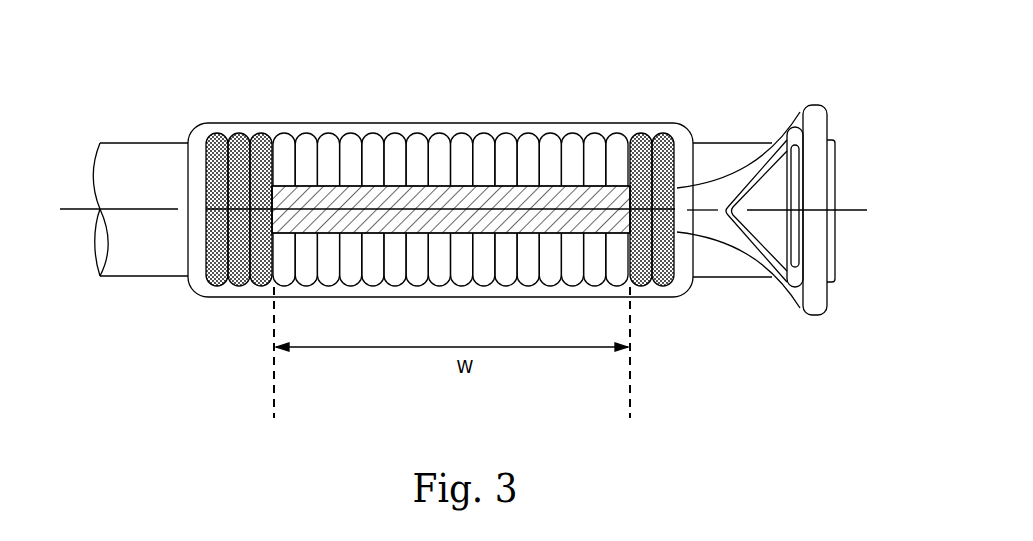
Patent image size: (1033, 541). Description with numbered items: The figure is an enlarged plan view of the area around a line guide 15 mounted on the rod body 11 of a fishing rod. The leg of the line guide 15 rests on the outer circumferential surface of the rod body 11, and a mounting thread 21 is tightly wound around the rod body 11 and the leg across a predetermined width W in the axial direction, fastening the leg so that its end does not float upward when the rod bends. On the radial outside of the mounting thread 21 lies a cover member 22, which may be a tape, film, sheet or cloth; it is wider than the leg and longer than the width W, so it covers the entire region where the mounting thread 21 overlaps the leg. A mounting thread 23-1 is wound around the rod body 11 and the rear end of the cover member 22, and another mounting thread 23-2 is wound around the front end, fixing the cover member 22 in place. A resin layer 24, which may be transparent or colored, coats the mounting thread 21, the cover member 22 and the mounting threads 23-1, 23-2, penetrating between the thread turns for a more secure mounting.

The rod body 11 is at (132, 150).
The line guide 15 is at (813, 112).
The mounting thread 21 is at (464, 150).
The cover member 22 is at (332, 198).
The mounting thread for the cover member 23-1 is at (264, 146).
The mounting thread for the cover member 23-2 is at (645, 144).
The resin layer 24 is at (580, 123).